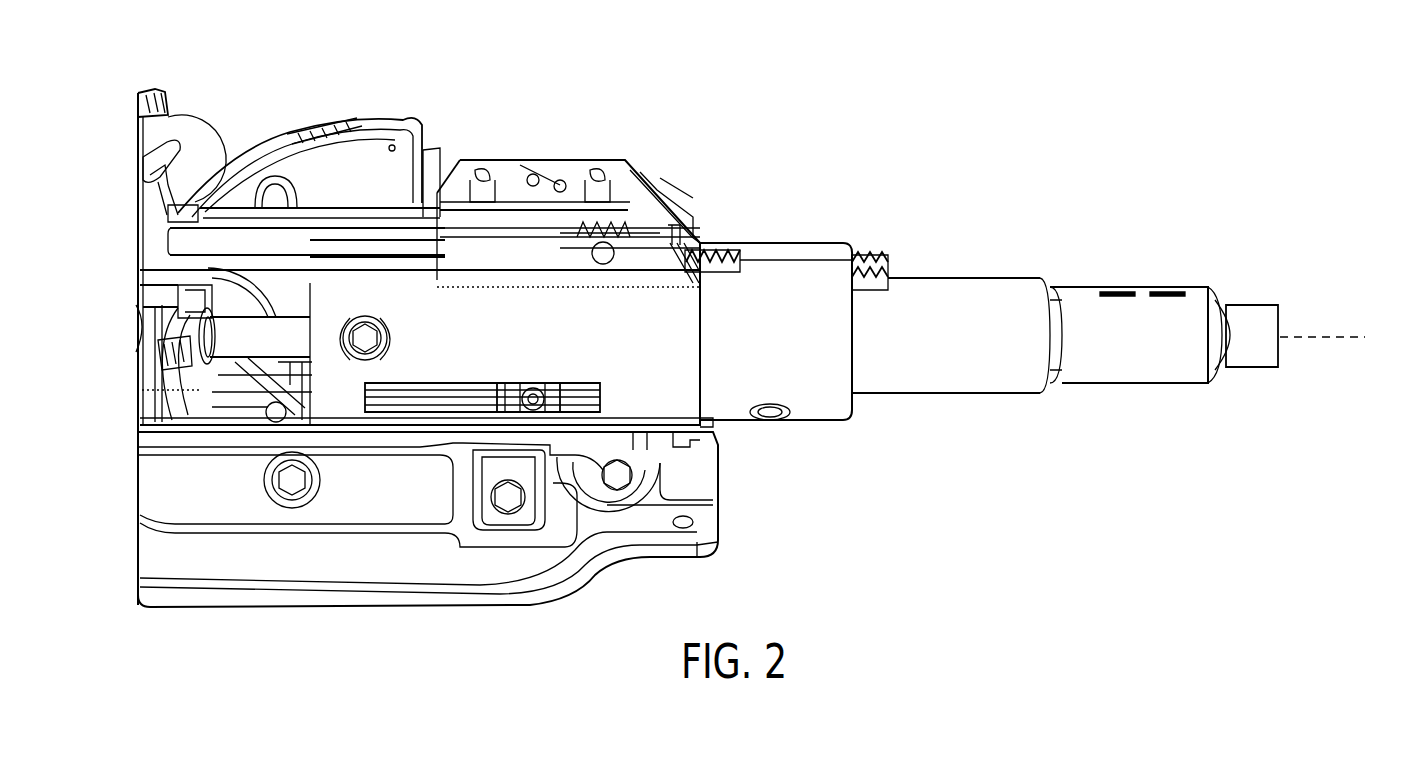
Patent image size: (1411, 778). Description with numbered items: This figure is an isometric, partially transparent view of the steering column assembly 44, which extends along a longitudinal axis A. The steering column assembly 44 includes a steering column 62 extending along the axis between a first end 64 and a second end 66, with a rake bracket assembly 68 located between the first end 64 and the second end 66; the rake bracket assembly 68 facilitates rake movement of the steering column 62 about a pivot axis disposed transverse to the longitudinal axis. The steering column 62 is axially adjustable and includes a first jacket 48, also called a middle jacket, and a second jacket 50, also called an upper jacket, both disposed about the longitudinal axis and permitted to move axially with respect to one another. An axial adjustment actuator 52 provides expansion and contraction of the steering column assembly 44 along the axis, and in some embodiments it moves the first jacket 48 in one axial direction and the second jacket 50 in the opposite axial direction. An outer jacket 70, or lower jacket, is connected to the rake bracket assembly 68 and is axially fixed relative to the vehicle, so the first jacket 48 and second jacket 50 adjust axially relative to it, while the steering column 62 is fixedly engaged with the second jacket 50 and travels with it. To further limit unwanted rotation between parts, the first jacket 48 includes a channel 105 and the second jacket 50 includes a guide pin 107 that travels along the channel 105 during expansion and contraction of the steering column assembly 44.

The steering column assembly 44 is at (1152, 119).
The first jacket 48 is at (788, 246).
The second jacket 50 is at (998, 282).
The axial adjustment actuator 52 is at (657, 164).
The steering column 62 is at (1281, 321).
The first end 64 is at (140, 319).
The second end 66 is at (1245, 305).
The rake bracket assembly 68 is at (722, 538).
The outer jacket 70 is at (497, 162).
The channel 105 is at (428, 386).
The guide pin 107 is at (547, 386).